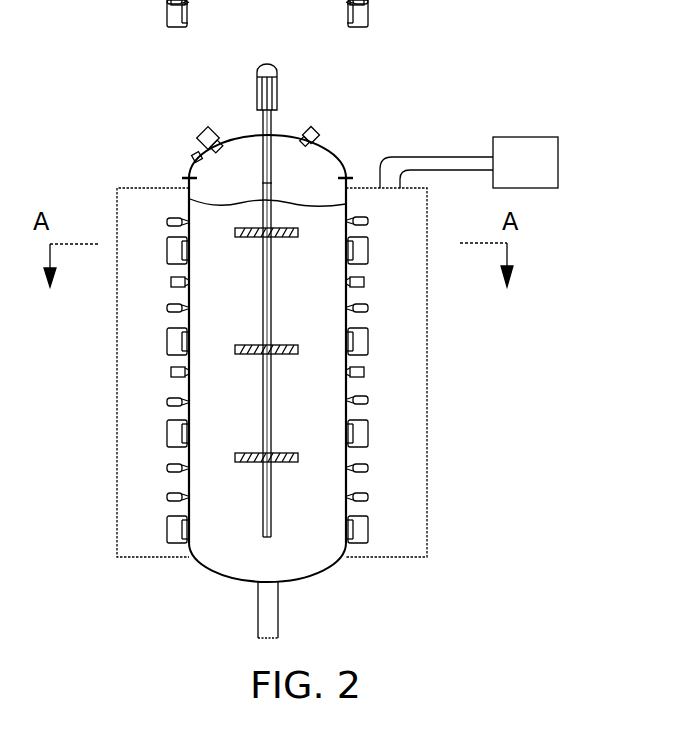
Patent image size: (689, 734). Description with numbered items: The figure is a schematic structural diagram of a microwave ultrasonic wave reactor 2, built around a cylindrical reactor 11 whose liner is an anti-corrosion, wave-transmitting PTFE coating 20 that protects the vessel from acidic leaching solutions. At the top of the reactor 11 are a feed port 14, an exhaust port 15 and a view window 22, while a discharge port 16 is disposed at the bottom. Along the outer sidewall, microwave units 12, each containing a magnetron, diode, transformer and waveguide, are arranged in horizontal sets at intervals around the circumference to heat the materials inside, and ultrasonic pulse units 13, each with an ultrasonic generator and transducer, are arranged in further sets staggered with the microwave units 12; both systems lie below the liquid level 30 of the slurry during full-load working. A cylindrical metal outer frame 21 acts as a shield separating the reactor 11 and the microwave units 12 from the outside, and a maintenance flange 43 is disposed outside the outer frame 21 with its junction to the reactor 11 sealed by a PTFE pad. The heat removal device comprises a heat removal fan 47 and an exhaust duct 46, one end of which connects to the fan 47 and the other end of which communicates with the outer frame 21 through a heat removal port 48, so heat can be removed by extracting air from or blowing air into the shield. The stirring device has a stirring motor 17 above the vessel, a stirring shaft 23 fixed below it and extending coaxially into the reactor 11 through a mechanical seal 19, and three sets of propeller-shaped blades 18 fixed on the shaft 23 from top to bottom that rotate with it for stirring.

The microwave ultrasonic wave reactor 2 is at (97, 54).
The reactor 11 is at (203, 569).
The microwave unit 12 is at (368, 338).
The ultrasonic pulse unit 13 is at (172, 373).
The feed port 14 is at (206, 132).
The exhaust port 15 is at (314, 135).
The discharge port 16 is at (270, 602).
The stirring motor 17 is at (258, 87).
The blades 18 is at (290, 346).
The mechanical seal 19 is at (272, 134).
The PTFE coating 20 is at (225, 577).
The outer frame 21 is at (428, 428).
The view window 22 is at (198, 158).
The stirring shaft 23 is at (270, 183).
The liquid level 30 is at (215, 203).
The maintenance flange 43 is at (188, 177).
The exhaust duct 46 is at (449, 165).
The heat removal fan 47 is at (528, 163).
The heat removal port 48 is at (390, 155).